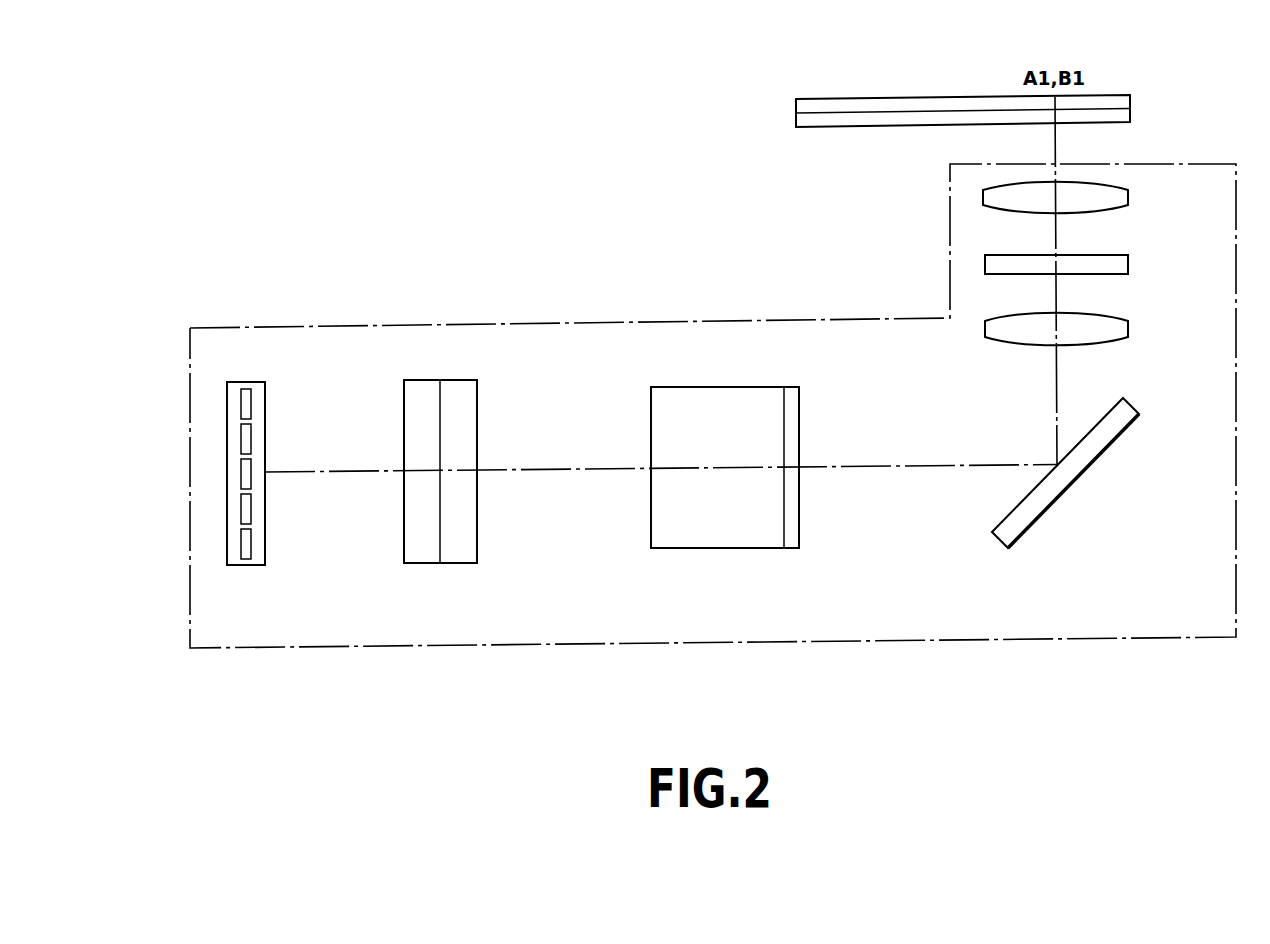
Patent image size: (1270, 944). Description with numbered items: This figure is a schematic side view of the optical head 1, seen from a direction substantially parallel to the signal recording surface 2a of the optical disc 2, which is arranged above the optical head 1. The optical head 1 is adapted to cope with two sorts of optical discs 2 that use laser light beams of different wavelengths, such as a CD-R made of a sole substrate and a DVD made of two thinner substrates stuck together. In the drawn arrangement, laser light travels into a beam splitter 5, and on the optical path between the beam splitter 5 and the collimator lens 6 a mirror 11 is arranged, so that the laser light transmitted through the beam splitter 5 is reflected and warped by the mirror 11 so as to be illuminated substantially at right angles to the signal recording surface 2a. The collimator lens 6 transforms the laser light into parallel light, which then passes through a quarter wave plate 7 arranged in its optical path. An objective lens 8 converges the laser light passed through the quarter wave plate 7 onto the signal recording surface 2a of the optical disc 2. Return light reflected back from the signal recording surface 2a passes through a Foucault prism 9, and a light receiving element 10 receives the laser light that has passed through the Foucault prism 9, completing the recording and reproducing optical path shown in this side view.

The optical head 1 is at (495, 322).
The optical disc 2 is at (836, 99).
The signal recording surface 2a is at (827, 129).
The beam splitter 5 is at (718, 549).
The collimator lens 6 is at (1128, 325).
The quarter wave plate 7 is at (1128, 258).
The objective lens 8 is at (1128, 194).
The Foucault prism 9 is at (460, 564).
The light receiving element 10 is at (249, 566).
The mirror 11 is at (1088, 467).